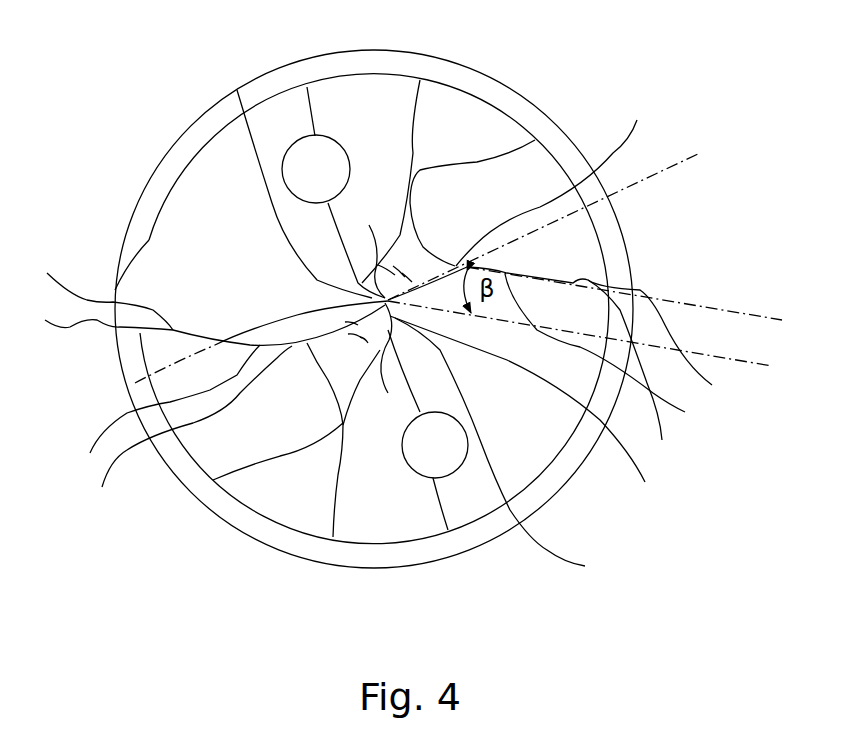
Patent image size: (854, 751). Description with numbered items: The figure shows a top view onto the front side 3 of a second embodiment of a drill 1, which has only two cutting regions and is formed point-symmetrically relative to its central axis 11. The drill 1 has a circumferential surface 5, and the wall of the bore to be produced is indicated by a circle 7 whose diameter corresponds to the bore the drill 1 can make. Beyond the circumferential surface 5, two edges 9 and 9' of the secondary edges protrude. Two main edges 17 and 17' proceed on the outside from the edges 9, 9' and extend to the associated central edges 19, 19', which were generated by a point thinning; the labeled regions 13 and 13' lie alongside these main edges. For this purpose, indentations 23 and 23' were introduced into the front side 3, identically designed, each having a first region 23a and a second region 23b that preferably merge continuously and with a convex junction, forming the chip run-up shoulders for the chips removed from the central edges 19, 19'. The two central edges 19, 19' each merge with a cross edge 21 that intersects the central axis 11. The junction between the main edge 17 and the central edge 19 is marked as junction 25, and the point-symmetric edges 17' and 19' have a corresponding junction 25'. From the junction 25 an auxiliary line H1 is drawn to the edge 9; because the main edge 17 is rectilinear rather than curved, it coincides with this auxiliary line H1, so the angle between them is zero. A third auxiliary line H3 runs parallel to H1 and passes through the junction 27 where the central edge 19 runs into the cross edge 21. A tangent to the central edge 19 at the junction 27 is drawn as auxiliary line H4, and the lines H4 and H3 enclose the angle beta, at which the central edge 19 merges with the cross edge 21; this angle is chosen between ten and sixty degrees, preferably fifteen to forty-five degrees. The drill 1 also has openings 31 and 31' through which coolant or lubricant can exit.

The drill 1 is at (140, 117).
The front side 3 is at (225, 275).
The circumferential surface 5 is at (465, 92).
The circle 7 is at (172, 470).
The edge 9 is at (559, 332).
The edge 9' is at (205, 325).
The central axis 11 is at (355, 289).
The blade surface 13 is at (557, 252).
The blade surface 13' is at (197, 374).
The main edge 17 is at (610, 350).
The main edge 17' is at (95, 292).
The central edge 19 is at (529, 181).
The central edge 19' is at (185, 428).
The cross edge 21 is at (135, 383).
The indentation 23 is at (292, 167).
The indentation 23' is at (509, 449).
The first region 23a is at (377, 308).
The second region 23b is at (388, 267).
The junction 25 is at (635, 373).
The junction 25' is at (162, 412).
The junction 27 is at (528, 412).
The opening 31 is at (428, 430).
The opening 31' is at (316, 169).
The auxiliary line H1 is at (748, 313).
The third auxiliary line H3 is at (733, 360).
The auxiliary line H4 is at (660, 172).